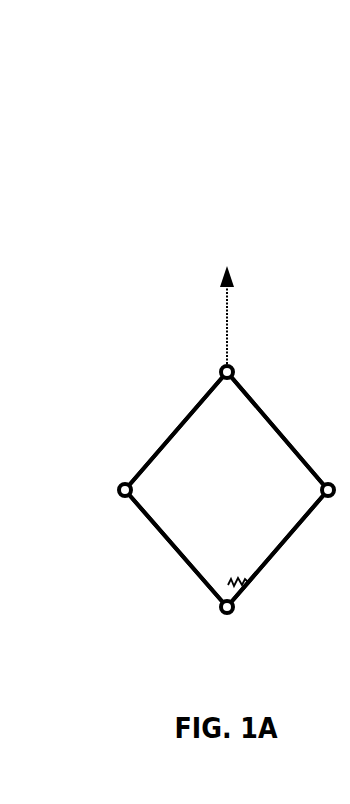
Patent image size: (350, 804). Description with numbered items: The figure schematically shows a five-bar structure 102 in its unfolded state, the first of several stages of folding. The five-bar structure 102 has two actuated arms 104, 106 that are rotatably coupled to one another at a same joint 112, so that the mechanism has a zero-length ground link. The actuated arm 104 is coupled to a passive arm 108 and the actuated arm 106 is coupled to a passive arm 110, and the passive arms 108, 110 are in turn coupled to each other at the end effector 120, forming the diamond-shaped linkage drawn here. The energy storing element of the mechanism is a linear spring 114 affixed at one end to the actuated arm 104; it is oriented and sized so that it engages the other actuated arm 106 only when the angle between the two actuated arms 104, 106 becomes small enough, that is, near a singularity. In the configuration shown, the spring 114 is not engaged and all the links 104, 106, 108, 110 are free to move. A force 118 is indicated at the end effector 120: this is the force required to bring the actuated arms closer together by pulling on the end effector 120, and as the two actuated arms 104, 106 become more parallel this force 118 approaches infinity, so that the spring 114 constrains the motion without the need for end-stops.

The five-bar structure 102 is at (174, 212).
The actuated arm 104 is at (272, 558).
The actuated arm 106 is at (175, 550).
The passive arm 108 is at (282, 433).
The passive arm 110 is at (178, 423).
The joint 112 is at (220, 615).
The linear spring 114 is at (244, 577).
The force 118 is at (245, 336).
The end effector 120 is at (236, 367).